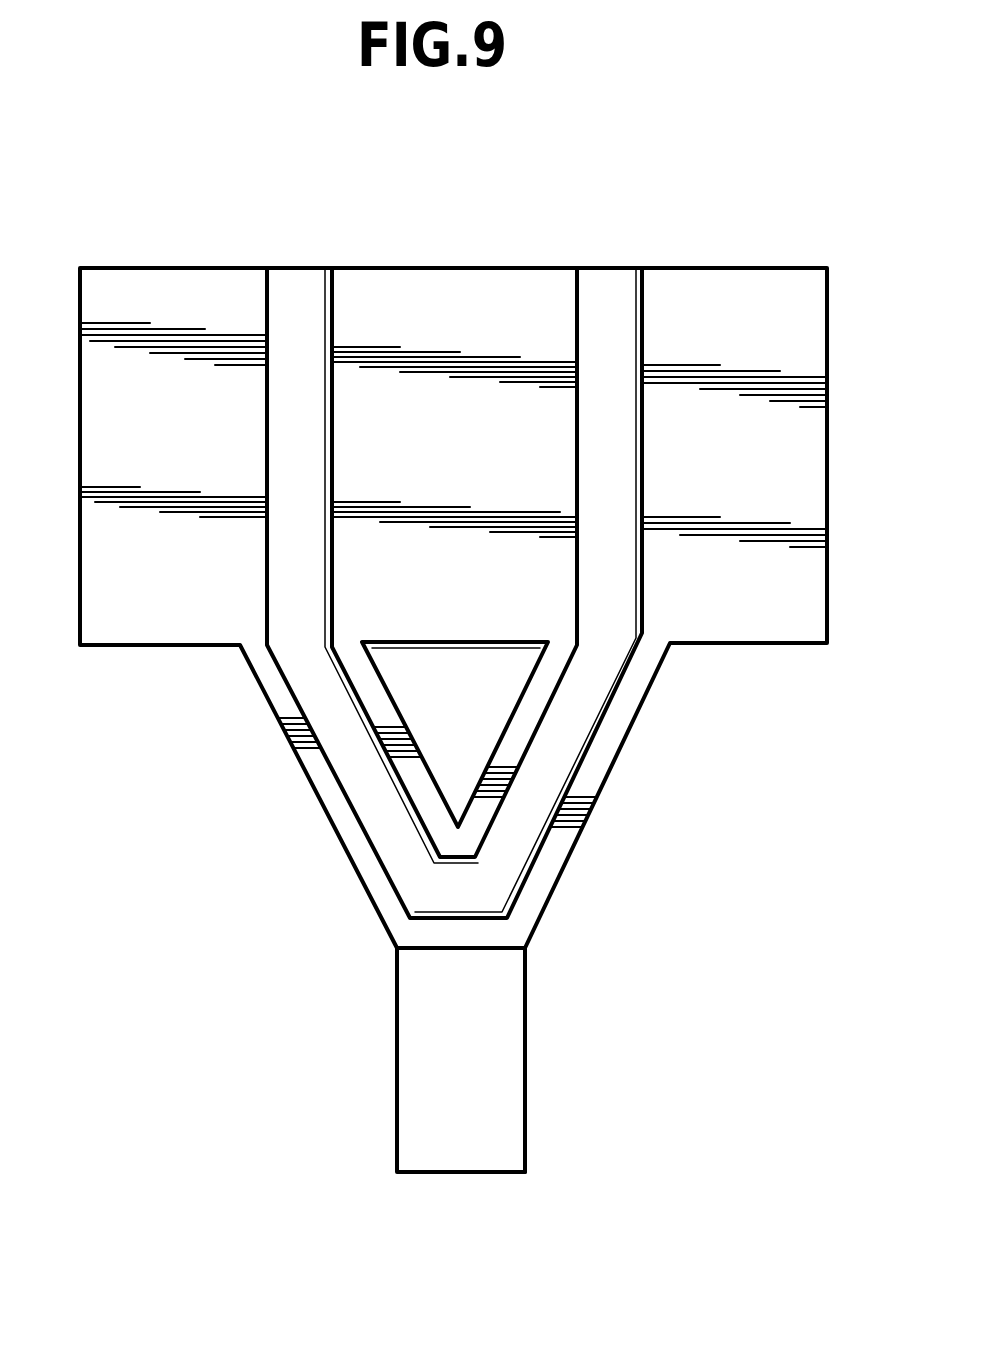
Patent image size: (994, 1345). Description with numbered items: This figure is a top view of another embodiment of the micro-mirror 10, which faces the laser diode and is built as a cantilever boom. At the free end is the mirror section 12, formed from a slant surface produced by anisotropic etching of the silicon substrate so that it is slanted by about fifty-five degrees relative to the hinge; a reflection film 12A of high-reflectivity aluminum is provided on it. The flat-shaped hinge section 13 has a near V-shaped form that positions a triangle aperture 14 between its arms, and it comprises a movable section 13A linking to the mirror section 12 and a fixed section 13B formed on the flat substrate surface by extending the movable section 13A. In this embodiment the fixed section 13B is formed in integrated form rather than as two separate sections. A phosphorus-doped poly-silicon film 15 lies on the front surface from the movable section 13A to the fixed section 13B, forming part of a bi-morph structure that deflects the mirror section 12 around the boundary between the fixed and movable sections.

The micro-mirror 10 is at (706, 242).
The mirror section 12 is at (536, 1056).
The reflection film 12A is at (510, 1003).
The hinge section 13 is at (802, 722).
The movable section 13A is at (627, 705).
The fixed section 13B is at (169, 283).
The triangle aperture 14 is at (478, 724).
The poly-silicon film 15 is at (510, 870).